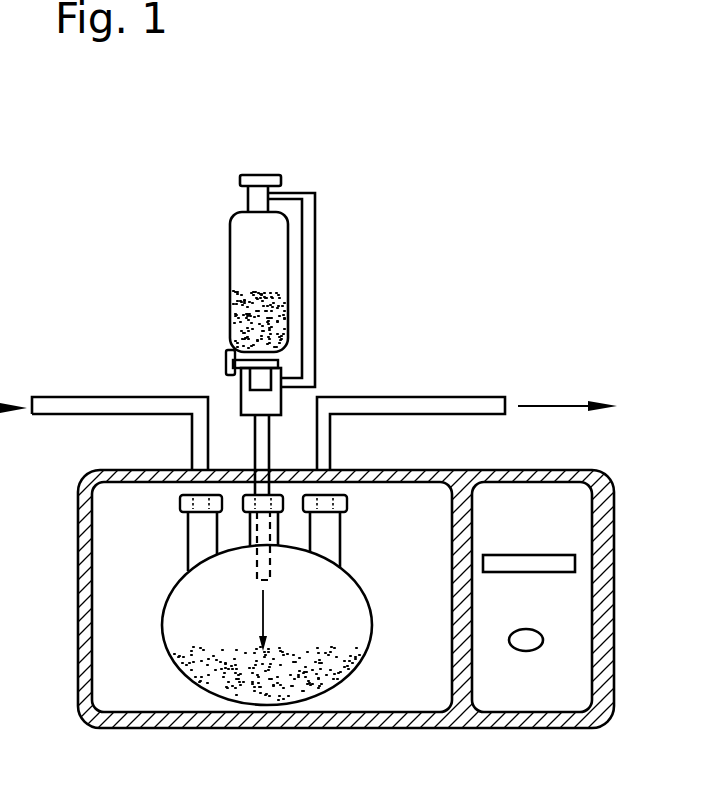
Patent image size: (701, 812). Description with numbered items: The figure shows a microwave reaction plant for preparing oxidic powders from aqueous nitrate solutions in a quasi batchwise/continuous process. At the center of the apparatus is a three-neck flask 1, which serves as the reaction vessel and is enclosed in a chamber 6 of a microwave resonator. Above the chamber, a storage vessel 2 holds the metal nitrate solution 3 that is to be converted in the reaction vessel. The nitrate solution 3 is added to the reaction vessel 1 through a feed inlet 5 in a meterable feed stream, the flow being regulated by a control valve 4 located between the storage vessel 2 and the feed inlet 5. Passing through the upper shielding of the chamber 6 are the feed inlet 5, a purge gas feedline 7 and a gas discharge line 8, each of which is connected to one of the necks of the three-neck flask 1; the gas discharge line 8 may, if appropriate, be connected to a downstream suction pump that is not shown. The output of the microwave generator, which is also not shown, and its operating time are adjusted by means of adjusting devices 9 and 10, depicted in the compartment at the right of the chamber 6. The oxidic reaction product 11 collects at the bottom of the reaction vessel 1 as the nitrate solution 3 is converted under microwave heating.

The three-neck flask 1 is at (165, 600).
The storage vessel 2 is at (237, 232).
The metal nitrate solution 3 is at (246, 318).
The control valve 4 is at (226, 362).
The feed inlet 5 is at (256, 449).
The chamber 6 is at (112, 514).
The purge gas feedline 7 is at (66, 400).
The gas discharge line 8 is at (477, 402).
The adjusting device 9 is at (572, 562).
The adjusting device 10 is at (542, 641).
The oxidic reaction product 11 is at (240, 702).